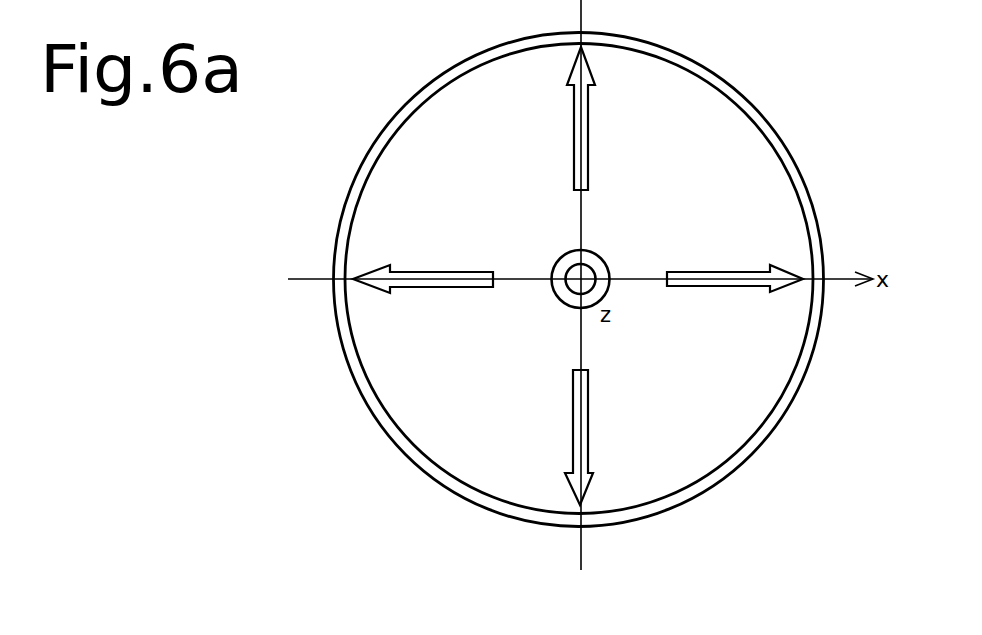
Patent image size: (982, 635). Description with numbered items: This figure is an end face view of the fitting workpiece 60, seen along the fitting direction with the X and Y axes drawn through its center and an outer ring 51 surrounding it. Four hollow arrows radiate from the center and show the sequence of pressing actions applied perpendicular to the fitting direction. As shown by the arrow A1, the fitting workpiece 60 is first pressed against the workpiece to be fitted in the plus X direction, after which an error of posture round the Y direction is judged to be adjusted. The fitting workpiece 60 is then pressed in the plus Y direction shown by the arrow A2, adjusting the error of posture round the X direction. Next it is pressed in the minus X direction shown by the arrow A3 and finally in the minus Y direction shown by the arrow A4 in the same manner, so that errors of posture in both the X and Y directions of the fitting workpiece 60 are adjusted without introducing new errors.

The ring / outer edge 51 is at (815, 203).
The fitting workpiece 60 is at (748, 168).
The arrow A1 is at (717, 288).
The arrow A2 is at (588, 160).
The arrow A3 is at (443, 287).
The arrow A4 is at (588, 440).